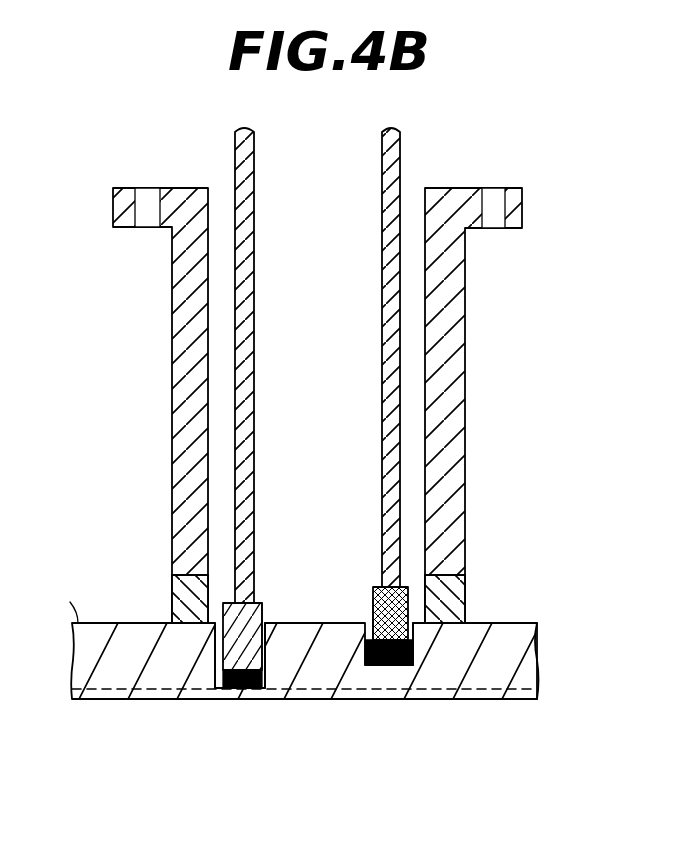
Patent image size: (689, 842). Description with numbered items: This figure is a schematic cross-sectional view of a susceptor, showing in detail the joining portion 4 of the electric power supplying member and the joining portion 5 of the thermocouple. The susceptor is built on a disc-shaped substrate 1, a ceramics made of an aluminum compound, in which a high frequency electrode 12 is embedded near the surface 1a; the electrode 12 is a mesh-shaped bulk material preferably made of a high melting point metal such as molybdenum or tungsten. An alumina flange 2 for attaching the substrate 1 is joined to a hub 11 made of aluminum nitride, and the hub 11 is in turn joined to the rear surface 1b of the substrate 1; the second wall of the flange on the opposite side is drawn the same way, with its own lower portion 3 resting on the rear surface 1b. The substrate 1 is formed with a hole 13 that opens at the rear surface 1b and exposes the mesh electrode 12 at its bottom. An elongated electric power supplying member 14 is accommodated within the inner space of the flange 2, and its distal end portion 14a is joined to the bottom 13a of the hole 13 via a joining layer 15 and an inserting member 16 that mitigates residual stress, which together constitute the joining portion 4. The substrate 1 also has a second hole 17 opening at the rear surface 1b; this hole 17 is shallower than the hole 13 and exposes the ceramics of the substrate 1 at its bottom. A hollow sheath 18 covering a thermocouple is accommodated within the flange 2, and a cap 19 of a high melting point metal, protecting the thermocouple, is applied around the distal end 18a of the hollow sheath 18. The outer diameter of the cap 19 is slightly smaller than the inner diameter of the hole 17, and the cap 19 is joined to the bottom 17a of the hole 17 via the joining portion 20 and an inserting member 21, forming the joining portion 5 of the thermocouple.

The substrate 1 is at (83, 650).
The surface 1a is at (108, 700).
The rear surface 1b is at (62, 600).
The flange 2 is at (172, 412).
The side wall 3 is at (473, 405).
The joining portion of the electric power supplying member 4 is at (220, 583).
The joining portion of a thermocouple 5 is at (410, 580).
The hub 11 is at (172, 598).
The high frequency electrode 12 is at (533, 677).
The hole 13 is at (217, 668).
The bottom of the hole 13a is at (268, 660).
The electric power supplying member 14 is at (254, 212).
The distal end portion 14a is at (256, 605).
The joining layer 15 is at (242, 690).
The inserting member 16 is at (266, 652).
The hole 17 is at (457, 597).
The bottom of the hole 17a is at (417, 665).
The hollow sheath 18 is at (383, 182).
The distal end 18a is at (380, 596).
The cap 19 is at (377, 610).
The joining portion 20 is at (381, 662).
The inserting member 21 is at (415, 645).